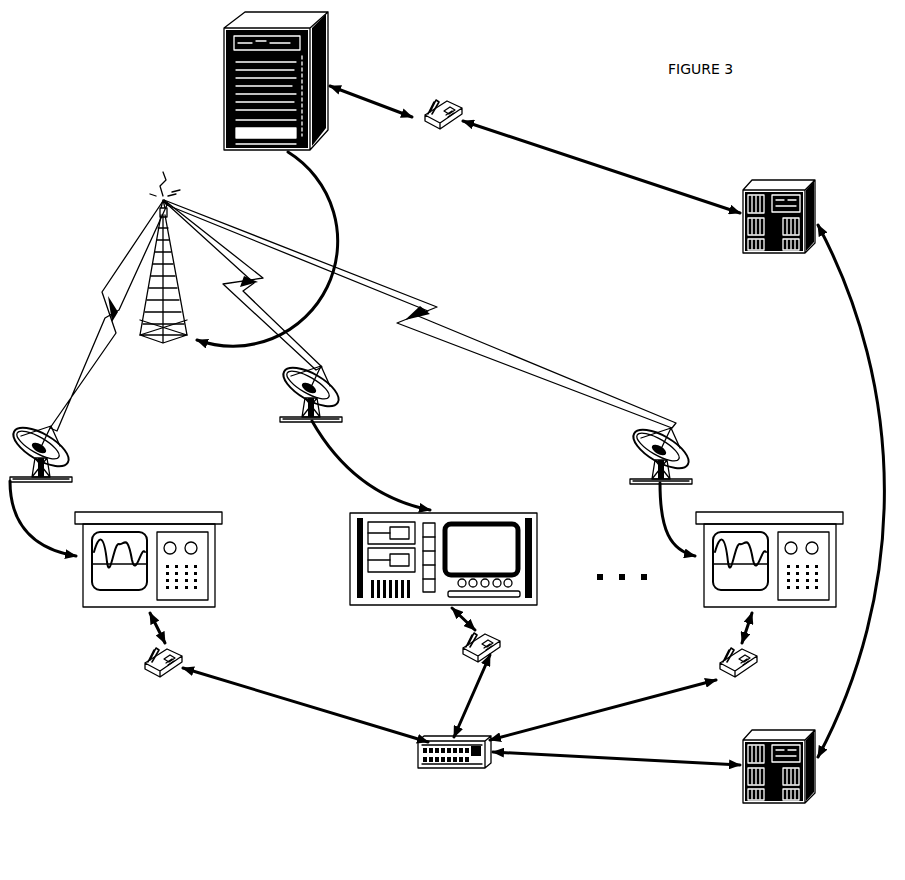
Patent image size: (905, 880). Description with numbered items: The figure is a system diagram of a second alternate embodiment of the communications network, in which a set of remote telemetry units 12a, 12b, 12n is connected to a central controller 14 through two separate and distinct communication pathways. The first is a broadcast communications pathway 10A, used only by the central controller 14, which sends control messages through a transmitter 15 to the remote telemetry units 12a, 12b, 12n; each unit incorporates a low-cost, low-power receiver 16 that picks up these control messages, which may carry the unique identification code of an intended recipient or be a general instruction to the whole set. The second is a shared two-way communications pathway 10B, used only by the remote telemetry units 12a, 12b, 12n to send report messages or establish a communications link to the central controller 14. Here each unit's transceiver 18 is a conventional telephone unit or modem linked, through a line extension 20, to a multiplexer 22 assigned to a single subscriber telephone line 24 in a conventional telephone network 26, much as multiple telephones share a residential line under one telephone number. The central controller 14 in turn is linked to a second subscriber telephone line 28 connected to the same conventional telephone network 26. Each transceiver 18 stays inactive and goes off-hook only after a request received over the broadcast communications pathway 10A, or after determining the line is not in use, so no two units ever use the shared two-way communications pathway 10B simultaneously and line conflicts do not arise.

The central controller 14 is at (226, 82).
The broadcast communications pathway 10A is at (160, 200).
The shared two-way communications pathway 10B is at (880, 447).
The transmitter 15 is at (163, 268).
The receiver 16 is at (73, 478).
The remote telemetry unit 12a is at (218, 560).
The remote telemetry unit 12b is at (538, 558).
The remote telemetry unit 12n is at (767, 512).
The transceiver 18 is at (183, 662).
The line extension 20 is at (312, 700).
The multiplexer 22 is at (452, 767).
The subscriber telephone line 24 is at (612, 760).
The conventional telephone network 26 is at (779, 501).
The second subscriber telephone line 28 is at (598, 168).